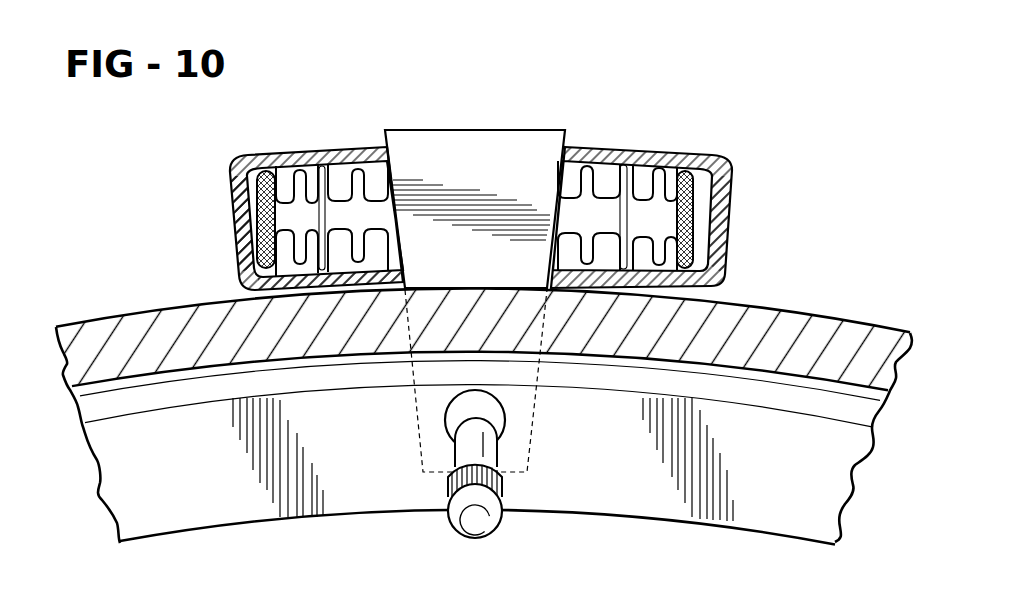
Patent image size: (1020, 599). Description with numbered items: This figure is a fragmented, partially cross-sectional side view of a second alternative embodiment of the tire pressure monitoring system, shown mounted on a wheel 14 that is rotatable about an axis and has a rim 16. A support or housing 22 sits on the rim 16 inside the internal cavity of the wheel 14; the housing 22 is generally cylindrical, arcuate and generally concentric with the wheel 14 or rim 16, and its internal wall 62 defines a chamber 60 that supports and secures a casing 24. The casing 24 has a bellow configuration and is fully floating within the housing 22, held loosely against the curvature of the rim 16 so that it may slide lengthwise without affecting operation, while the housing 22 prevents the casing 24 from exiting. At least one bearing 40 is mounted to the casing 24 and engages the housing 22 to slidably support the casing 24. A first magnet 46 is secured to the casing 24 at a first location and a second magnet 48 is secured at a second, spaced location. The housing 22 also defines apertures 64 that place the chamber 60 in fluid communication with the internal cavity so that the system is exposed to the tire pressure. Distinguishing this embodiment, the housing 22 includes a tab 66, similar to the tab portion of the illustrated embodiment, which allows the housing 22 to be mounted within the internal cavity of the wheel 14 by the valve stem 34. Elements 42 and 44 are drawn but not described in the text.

The wheel 14 is at (88, 503).
The rim 16 is at (93, 366).
The housing 22 is at (323, 150).
The casing 24 is at (608, 190).
The valve stem 34 is at (481, 522).
The bearing 40 is at (318, 162).
The side wall 42 is at (251, 187).
The side wall 44 is at (700, 196).
The first magnet 46 is at (252, 262).
The second magnet 48 is at (690, 170).
The chamber 60 is at (253, 178).
The internal wall 62 is at (356, 170).
The apertures 64 is at (240, 248).
The tab 66 is at (539, 158).